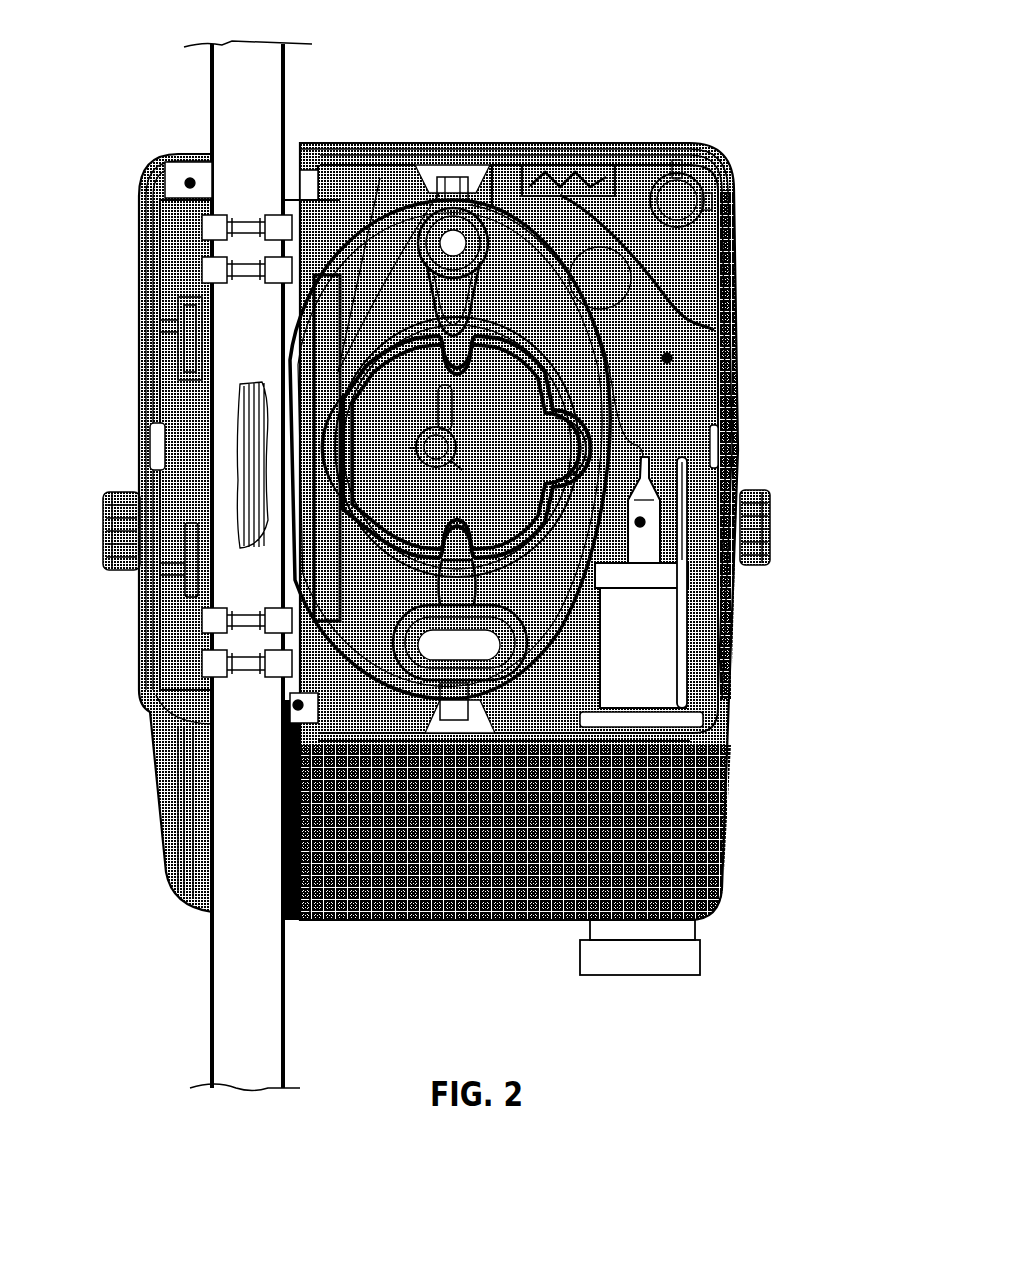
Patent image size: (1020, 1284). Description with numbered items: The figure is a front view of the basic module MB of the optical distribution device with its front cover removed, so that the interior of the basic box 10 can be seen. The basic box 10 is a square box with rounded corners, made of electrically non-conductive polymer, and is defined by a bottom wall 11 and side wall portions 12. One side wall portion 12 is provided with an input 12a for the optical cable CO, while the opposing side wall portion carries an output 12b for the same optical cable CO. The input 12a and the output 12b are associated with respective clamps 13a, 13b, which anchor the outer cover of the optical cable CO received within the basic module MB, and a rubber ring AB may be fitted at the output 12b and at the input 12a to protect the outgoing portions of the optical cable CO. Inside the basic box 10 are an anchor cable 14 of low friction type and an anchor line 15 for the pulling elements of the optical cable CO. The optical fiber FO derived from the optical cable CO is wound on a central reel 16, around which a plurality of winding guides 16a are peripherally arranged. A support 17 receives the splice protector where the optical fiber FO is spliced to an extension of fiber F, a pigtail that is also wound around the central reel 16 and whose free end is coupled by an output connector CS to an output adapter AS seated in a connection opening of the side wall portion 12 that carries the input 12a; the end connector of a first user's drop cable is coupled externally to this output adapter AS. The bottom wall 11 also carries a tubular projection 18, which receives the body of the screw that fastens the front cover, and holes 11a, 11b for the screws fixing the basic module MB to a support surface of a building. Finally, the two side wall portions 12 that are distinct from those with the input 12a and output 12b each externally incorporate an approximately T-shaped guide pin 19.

The basic box 10 is at (714, 152).
The basic module MB is at (736, 154).
The bottom wall 11 is at (670, 357).
The hole 11a is at (453, 642).
The hole 11b is at (458, 248).
The side wall portions 12 is at (433, 137).
The input 12a is at (192, 864).
The output 12b is at (300, 157).
The clamp 13a is at (246, 634).
The clamp 13b is at (244, 260).
The anchor cable 14 is at (584, 193).
The anchor line 15 is at (176, 296).
The central reel 16 is at (504, 351).
The winding guides 16a is at (418, 293).
The support 17 is at (300, 508).
The tubular projection 18 is at (423, 464).
The guide pin 19 is at (125, 568).
The rubber ring AB is at (188, 181).
The optical cable CO is at (207, 106).
The extension of fiber F is at (647, 378).
The optical fiber FO is at (568, 590).
The output connector CS is at (645, 524).
The output adapter AS is at (694, 683).